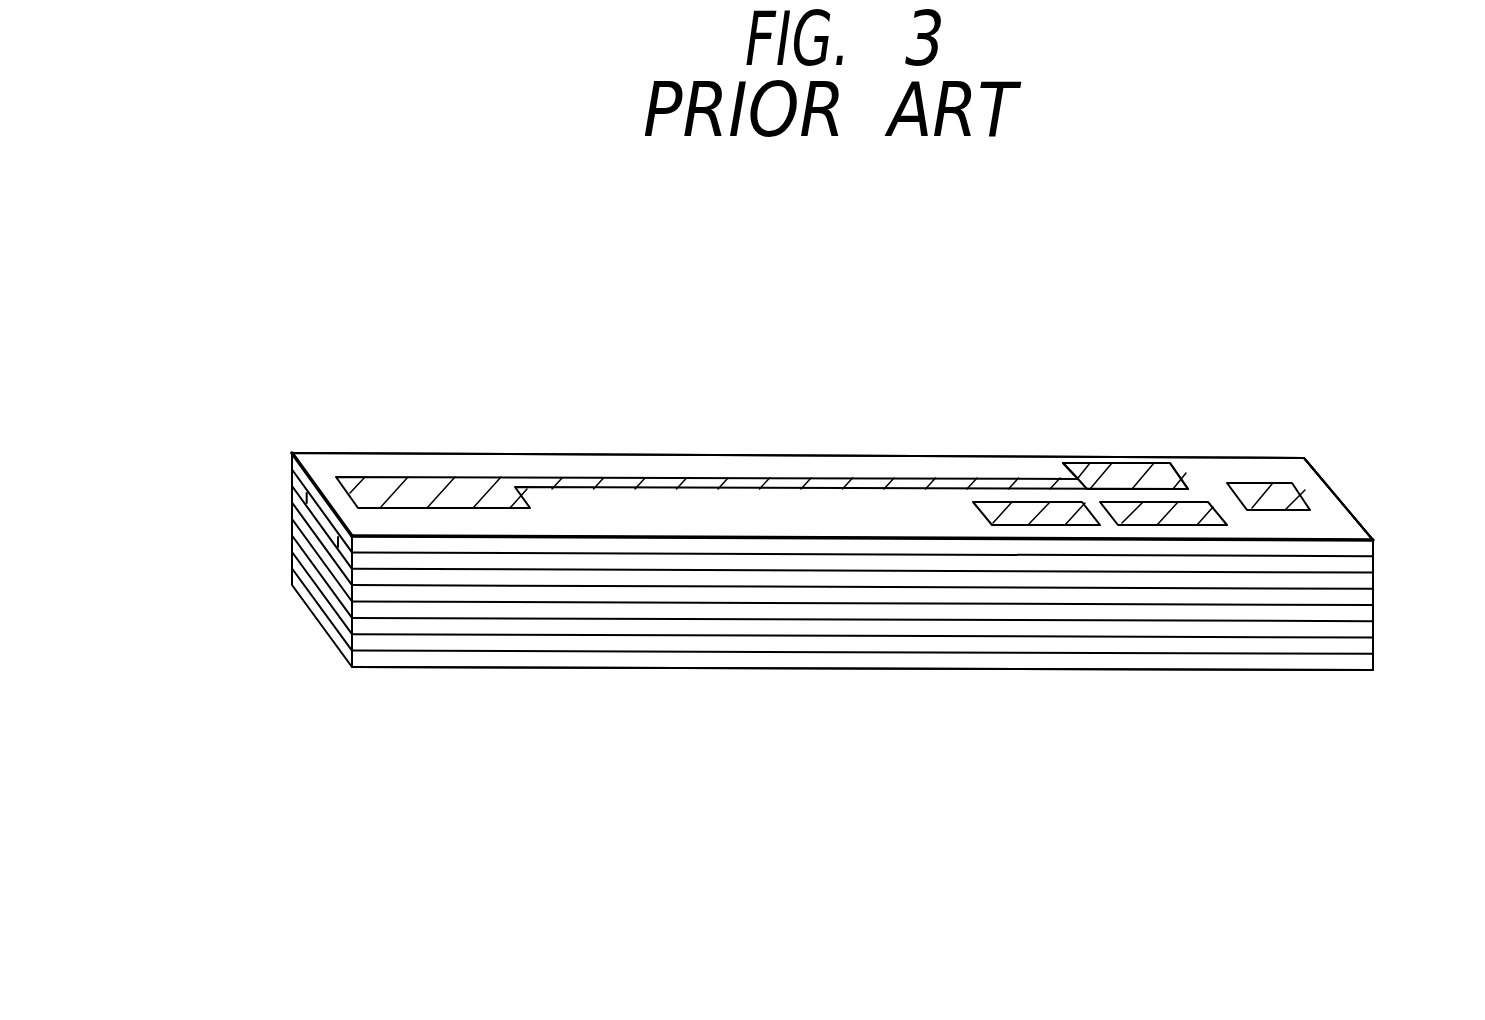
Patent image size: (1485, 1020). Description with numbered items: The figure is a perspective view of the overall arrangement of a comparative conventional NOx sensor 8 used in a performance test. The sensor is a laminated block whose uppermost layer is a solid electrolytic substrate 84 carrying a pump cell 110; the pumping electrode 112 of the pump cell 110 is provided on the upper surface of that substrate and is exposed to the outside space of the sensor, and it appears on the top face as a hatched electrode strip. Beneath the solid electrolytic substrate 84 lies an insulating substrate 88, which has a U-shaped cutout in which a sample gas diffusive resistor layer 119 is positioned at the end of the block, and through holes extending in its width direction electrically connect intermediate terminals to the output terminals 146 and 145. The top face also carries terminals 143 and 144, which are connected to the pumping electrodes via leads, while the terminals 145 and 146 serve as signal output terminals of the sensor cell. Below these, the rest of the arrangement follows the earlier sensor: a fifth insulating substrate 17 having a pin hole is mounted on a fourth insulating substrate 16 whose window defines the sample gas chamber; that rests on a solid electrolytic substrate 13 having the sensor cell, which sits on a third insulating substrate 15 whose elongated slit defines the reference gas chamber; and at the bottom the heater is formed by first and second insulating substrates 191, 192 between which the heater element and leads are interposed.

The conventional NOx sensor 8 is at (718, 378).
The pump cell 110 is at (478, 428).
The pumping electrode 112 is at (425, 497).
The sample gas diffusive resistor layer 119 is at (318, 518).
The terminal 144 is at (1127, 477).
The output terminal 145 is at (1270, 490).
The terminal 143 is at (1050, 515).
The output terminal 146 is at (1183, 520).
The solid electrolytic substrate 84 is at (1337, 515).
The insulating substrate 88 is at (1362, 567).
The fifth insulating substrate 17 is at (695, 578).
The fourth insulating substrate 16 is at (598, 593).
The solid electrolytic substrate 13 is at (1307, 612).
The third insulating substrate 15 is at (1353, 630).
The second insulating substrate 192 is at (503, 647).
The first insulating substrate 191 is at (430, 660).